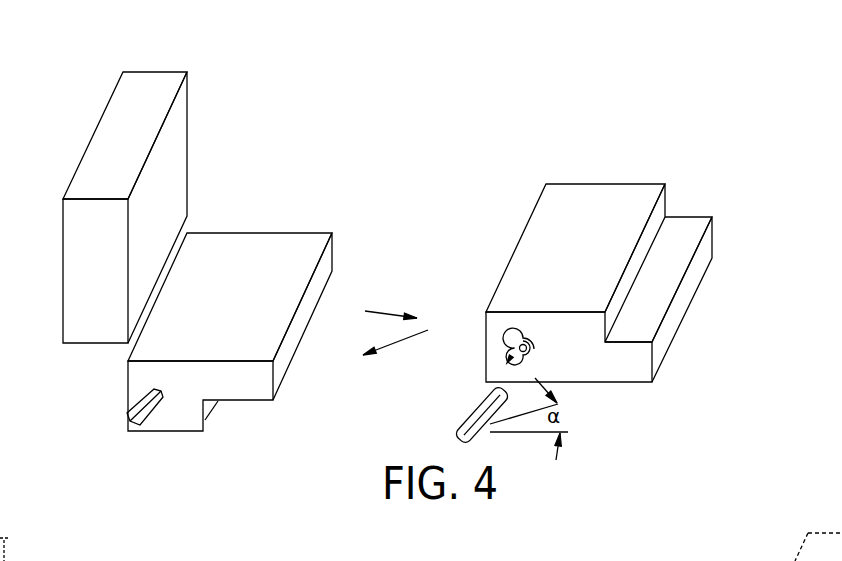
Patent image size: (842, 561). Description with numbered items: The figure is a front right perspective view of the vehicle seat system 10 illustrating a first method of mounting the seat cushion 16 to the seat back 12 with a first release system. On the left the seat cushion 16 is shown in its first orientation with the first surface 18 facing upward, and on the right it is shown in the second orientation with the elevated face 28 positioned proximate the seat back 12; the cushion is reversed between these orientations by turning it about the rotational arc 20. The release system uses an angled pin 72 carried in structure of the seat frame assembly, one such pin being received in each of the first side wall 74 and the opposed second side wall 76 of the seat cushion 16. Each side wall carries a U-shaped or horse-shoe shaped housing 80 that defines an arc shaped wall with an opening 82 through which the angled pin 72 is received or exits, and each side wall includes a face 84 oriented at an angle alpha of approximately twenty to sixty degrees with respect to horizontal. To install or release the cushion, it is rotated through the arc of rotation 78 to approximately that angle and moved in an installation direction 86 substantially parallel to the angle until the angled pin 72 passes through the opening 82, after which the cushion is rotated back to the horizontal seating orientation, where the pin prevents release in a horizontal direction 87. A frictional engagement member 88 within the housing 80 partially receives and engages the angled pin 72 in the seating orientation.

The vehicle seat system 10 is at (275, 106).
The seat back 12 is at (178, 137).
The seat cushion 16 is at (270, 203).
The first surface 18 is at (305, 245).
The rotational arc 20 is at (165, 280).
The elevated face 28 is at (624, 196).
The angled pin 72 is at (160, 400).
The first side wall 74 is at (190, 422).
The second side wall 76 is at (210, 226).
The arc of rotation 78 is at (318, 303).
The housing 80 is at (517, 335).
The opening 82 is at (517, 340).
The face 84 is at (476, 406).
The installation direction 86 is at (395, 343).
The horizontal direction 87 is at (380, 310).
The frictional engagement member 88 is at (517, 349).